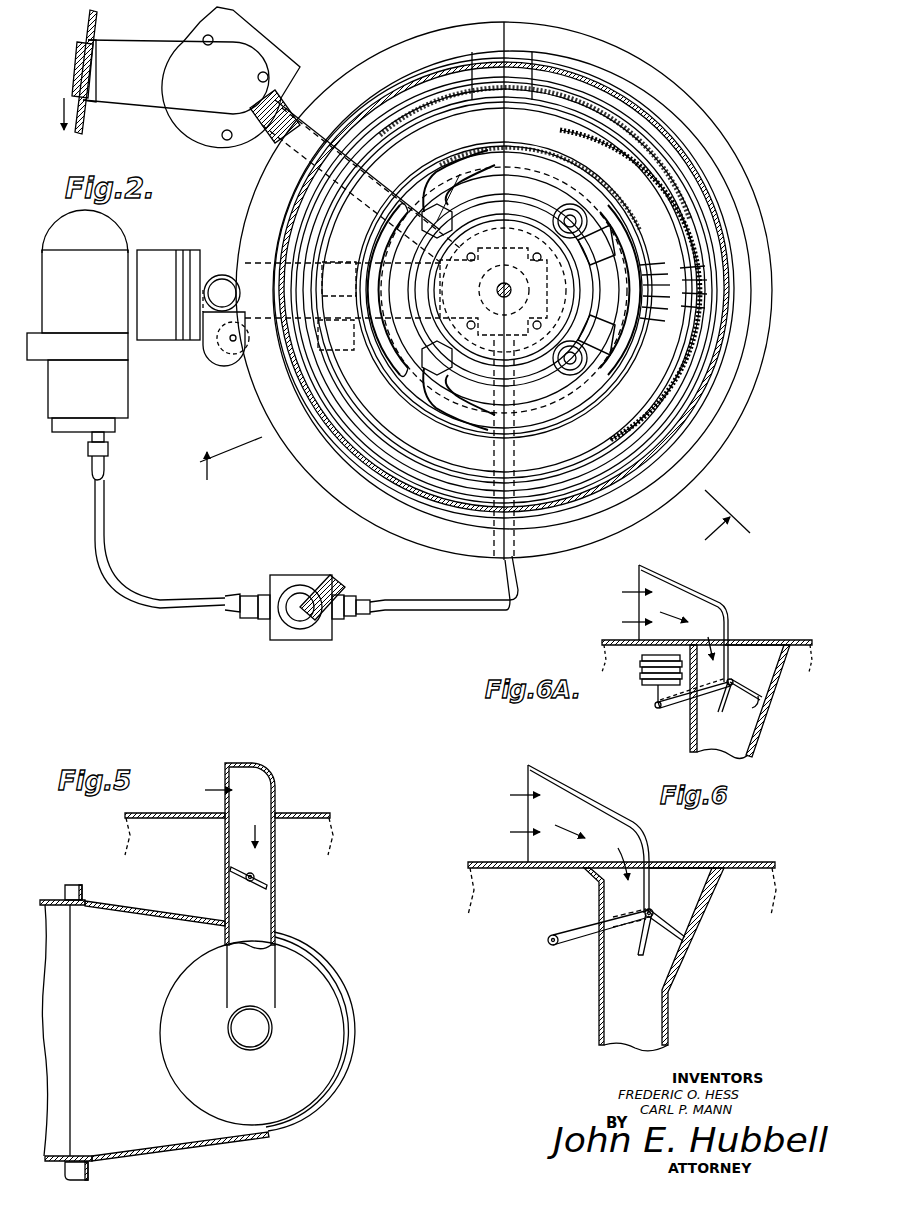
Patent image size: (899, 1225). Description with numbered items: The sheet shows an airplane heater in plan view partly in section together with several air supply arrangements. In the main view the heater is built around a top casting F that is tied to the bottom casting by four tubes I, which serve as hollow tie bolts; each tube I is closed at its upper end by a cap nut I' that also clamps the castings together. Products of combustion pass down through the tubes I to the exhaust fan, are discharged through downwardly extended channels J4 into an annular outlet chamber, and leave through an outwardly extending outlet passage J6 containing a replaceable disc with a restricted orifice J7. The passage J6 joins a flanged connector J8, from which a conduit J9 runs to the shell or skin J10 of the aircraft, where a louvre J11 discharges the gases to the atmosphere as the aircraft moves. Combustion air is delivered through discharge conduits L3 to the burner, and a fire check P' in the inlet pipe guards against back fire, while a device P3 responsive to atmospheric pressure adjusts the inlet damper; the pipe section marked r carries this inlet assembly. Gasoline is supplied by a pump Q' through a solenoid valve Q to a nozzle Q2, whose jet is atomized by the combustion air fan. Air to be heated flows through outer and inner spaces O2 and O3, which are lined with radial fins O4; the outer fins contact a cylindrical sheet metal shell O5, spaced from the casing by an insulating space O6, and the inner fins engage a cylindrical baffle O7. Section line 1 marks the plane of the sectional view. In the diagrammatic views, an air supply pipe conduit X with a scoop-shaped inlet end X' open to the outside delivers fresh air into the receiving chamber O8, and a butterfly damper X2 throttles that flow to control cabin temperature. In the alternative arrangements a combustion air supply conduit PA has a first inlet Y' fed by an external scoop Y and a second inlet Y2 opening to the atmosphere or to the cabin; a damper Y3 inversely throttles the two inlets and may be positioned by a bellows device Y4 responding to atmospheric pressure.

In FIG. 2, the shell or skin J10 is at (92, 30).
In FIG. 2, the louvre J11 is at (76, 76).
In FIG. 2, the conduit J9 is at (125, 50).
In FIG. 2, the flanged connector J8 is at (196, 132).
In FIG. 2, the restricted orifice J7 is at (300, 120).
In FIG. 2, the outlet passage J6 is at (392, 180).
In FIG. 2, the discharge conduits L3 is at (433, 170).
In FIG. 2, the cap nut I' is at (434, 304).
In FIG. 2, the tubes I is at (445, 290).
In FIG. 2, the downwardly extended channels J4 is at (618, 245).
In FIG. 2, the top casting F is at (690, 212).
In FIG. 2, the heat and sound insulating space O6 is at (742, 220).
In FIG. 2, the cylindrical sheet metal shell O5 is at (726, 272).
In FIG. 2, the outer space O2 is at (722, 354).
In FIG. 2, the radial fins or ribs O4 is at (628, 330).
In FIG. 2, the cylindrical baffle O7 is at (580, 418).
In FIG. 2, the inner space O3 is at (602, 436).
In FIG. 2, the fire check P' is at (222, 261).
In FIG. 2, the gear box r is at (162, 330).
In FIG. 2, the pressure responsive device P3 is at (238, 362).
In FIG. 2, the pump Q' is at (77, 345).
In FIG. 2, the solenoid valve Q is at (301, 592).
In FIG. 2, the nozzle Q2 is at (410, 610).
In FIG. 2, the section line 1 is at (475, 482).
In FIG. 6A, the external scoop Y is at (685, 623).
In FIG. 6, the external scoop Y is at (579, 839).
In FIG. 6A, the second inlet Y2 is at (757, 660).
In FIG. 6, the second inlet Y2 is at (682, 878).
In FIG. 6A, the damper Y3 is at (722, 716).
In FIG. 6, the damper Y3 is at (643, 950).
In FIG. 6A, the bellows device Y4 is at (642, 676).
In FIG. 6A, the first inlet Y' is at (692, 697).
In FIG. 6, the first inlet Y' is at (576, 914).
In FIG. 6A, the combustion air supply conduit PA is at (752, 752).
In FIG. 6, the combustion air supply conduit PA is at (668, 1015).
In FIG. 5, the air supply pipe conduit X is at (264, 885).
In FIG. 5, the inlet end X' is at (229, 795).
In FIG. 5, the damper X2 is at (236, 870).
In FIG. 5, the receiving chamber O8 is at (54, 898).